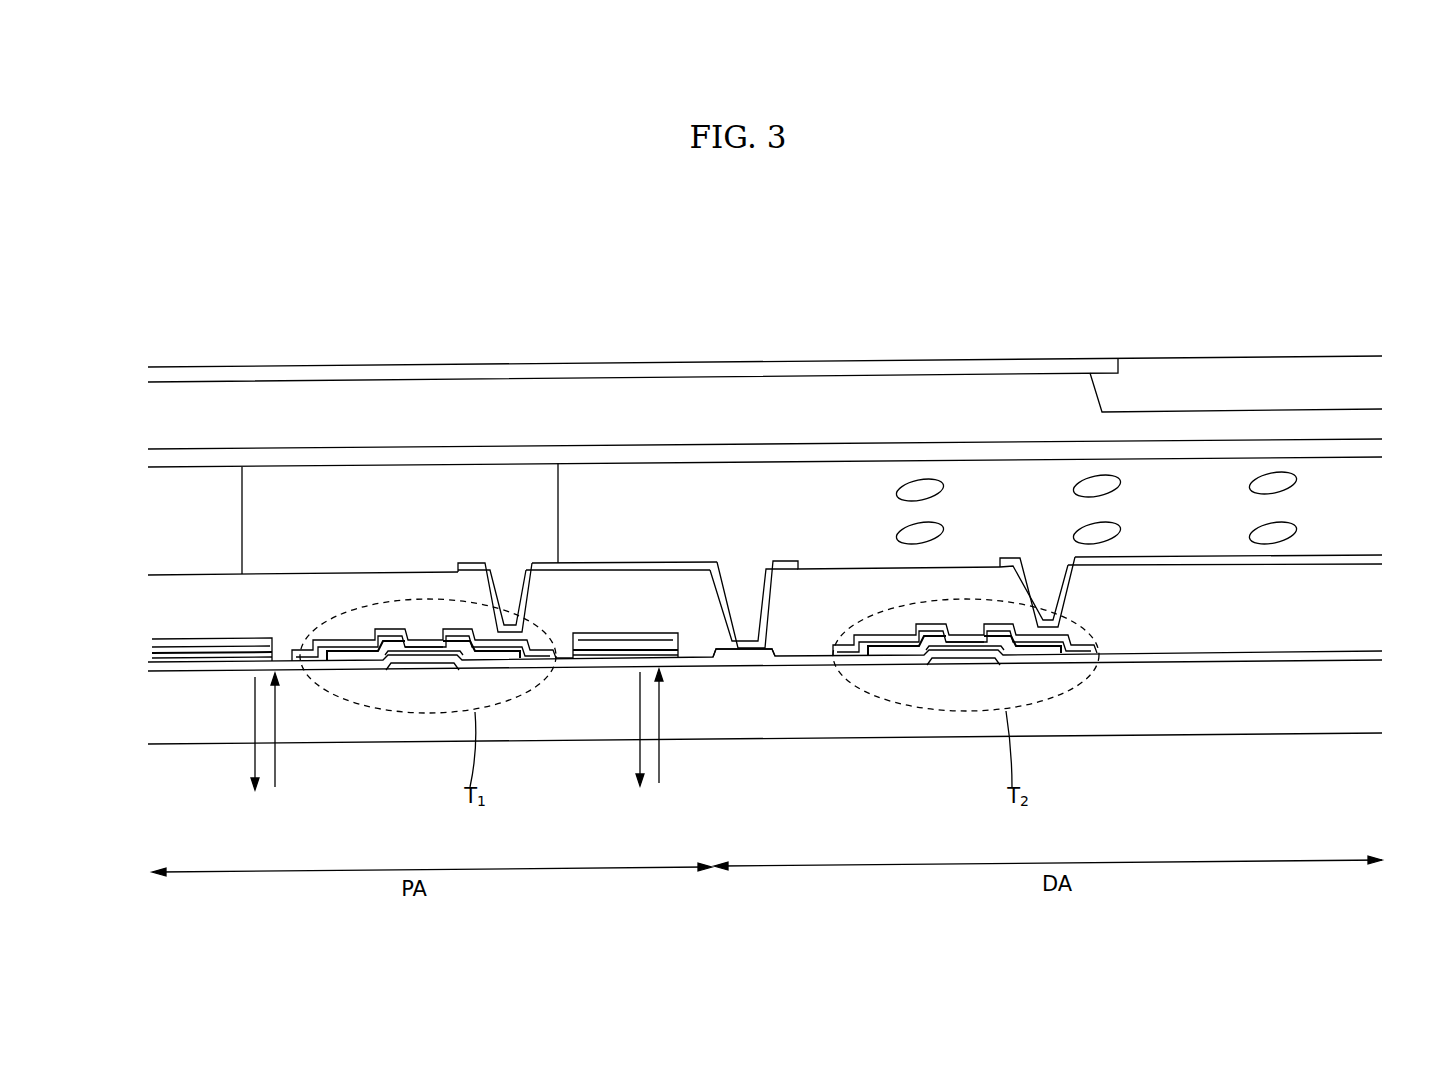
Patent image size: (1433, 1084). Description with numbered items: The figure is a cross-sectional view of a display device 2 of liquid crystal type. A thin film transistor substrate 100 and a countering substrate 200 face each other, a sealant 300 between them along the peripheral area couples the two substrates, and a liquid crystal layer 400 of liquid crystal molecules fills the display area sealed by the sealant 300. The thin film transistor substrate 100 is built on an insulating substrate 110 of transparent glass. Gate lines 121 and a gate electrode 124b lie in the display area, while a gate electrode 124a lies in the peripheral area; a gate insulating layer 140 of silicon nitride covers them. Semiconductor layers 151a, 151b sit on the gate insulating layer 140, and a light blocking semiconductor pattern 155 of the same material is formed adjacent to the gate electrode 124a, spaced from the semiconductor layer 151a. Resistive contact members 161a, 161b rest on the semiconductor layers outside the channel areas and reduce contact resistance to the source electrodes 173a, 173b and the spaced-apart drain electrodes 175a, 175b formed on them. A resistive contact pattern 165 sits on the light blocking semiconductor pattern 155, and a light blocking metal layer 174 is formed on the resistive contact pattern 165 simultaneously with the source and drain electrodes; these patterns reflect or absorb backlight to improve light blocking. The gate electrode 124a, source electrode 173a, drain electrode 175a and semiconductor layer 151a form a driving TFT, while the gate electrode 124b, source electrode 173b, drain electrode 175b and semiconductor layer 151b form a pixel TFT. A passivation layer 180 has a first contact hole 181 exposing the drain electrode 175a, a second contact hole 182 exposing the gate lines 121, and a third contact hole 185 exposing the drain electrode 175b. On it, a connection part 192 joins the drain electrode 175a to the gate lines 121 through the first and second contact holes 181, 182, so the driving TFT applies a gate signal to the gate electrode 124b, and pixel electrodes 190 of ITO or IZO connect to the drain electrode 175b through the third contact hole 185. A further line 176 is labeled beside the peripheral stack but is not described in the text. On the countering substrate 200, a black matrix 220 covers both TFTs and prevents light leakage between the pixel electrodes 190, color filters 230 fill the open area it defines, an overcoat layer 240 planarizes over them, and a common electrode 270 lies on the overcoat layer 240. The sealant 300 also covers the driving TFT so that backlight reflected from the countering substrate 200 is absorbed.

The liquid crystal display 2 is at (1294, 228).
The thin film transistor substrate 100 is at (135, 575).
The insulating substrate 110 is at (1133, 727).
The gate lines 121 is at (745, 668).
The gate electrode 124a is at (428, 667).
The gate electrode 124b is at (968, 662).
The gate insulating layer 140 is at (1198, 653).
The semiconductor layer 151a is at (380, 658).
The semiconductor layer 151b is at (920, 653).
The light blocking semiconductor pattern 155 is at (186, 668).
The resistive contact member 161a is at (357, 652).
The resistive contact member 161b is at (898, 647).
The resistive contact pattern 165 is at (233, 665).
The source electrode 173a is at (333, 645).
The source electrode 173b is at (873, 642).
The light blocking metal layer 174 is at (216, 672).
The drain electrode 175a is at (520, 655).
The drain electrode 175b is at (1060, 650).
The data line 176 is at (678, 653).
The passivation layer 180 is at (1278, 640).
The first contact hole 181 is at (493, 585).
The second contact hole 182 is at (727, 560).
The third contact hole 185 is at (1040, 570).
The pixel electrodes 190 is at (1188, 565).
The connection part 192 is at (613, 565).
The countering substrate 200 is at (135, 368).
The black matrix 220 is at (573, 366).
The color filters 230 is at (1186, 372).
The overcoat layer 240 is at (866, 385).
The common electrode 270 is at (960, 457).
The sealant 300 is at (242, 522).
The liquid crystal layer 400 is at (1350, 513).